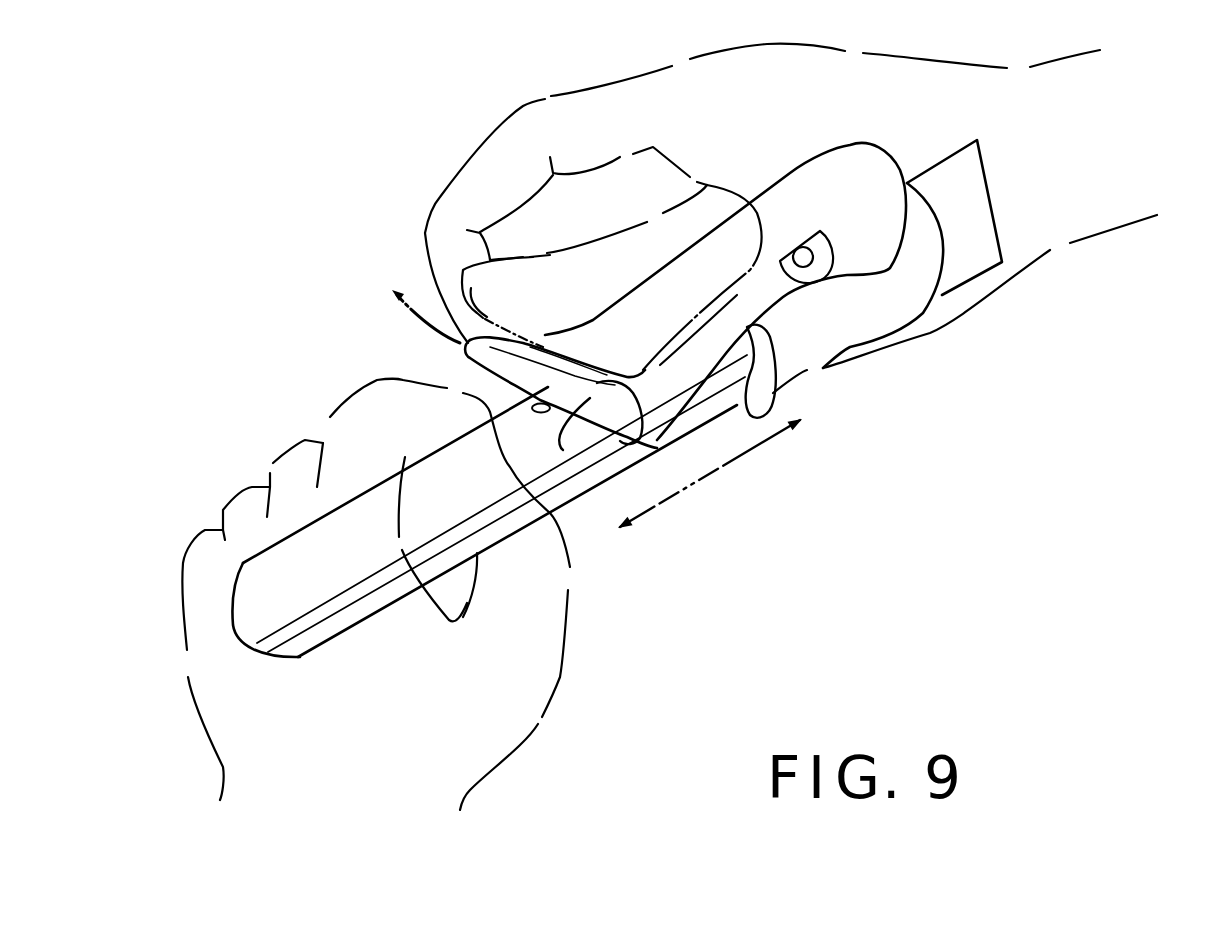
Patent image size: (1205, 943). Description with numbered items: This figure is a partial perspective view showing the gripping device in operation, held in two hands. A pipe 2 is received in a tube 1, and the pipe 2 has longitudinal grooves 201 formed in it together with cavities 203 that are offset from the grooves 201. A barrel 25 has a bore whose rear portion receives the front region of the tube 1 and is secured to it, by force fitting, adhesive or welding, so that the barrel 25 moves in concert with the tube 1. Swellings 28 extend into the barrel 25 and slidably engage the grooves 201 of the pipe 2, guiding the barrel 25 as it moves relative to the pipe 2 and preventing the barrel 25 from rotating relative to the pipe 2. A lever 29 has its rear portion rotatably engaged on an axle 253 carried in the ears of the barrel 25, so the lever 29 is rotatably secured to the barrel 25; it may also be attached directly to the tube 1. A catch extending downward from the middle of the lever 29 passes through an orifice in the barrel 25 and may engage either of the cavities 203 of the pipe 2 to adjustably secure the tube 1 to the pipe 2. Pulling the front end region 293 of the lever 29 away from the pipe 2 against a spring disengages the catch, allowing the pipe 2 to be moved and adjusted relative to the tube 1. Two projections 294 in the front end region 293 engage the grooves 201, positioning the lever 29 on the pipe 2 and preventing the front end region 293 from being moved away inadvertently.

The tube 1 is at (980, 237).
The pipe 2 is at (300, 563).
The barrel 25 is at (923, 287).
The swellings 28 is at (757, 418).
The lever 29 is at (655, 303).
The longitudinal grooves 201 is at (487, 522).
The cavities 203 is at (543, 413).
The axle 253 is at (813, 265).
The front end region 293 is at (467, 347).
The projections 294 is at (640, 446).